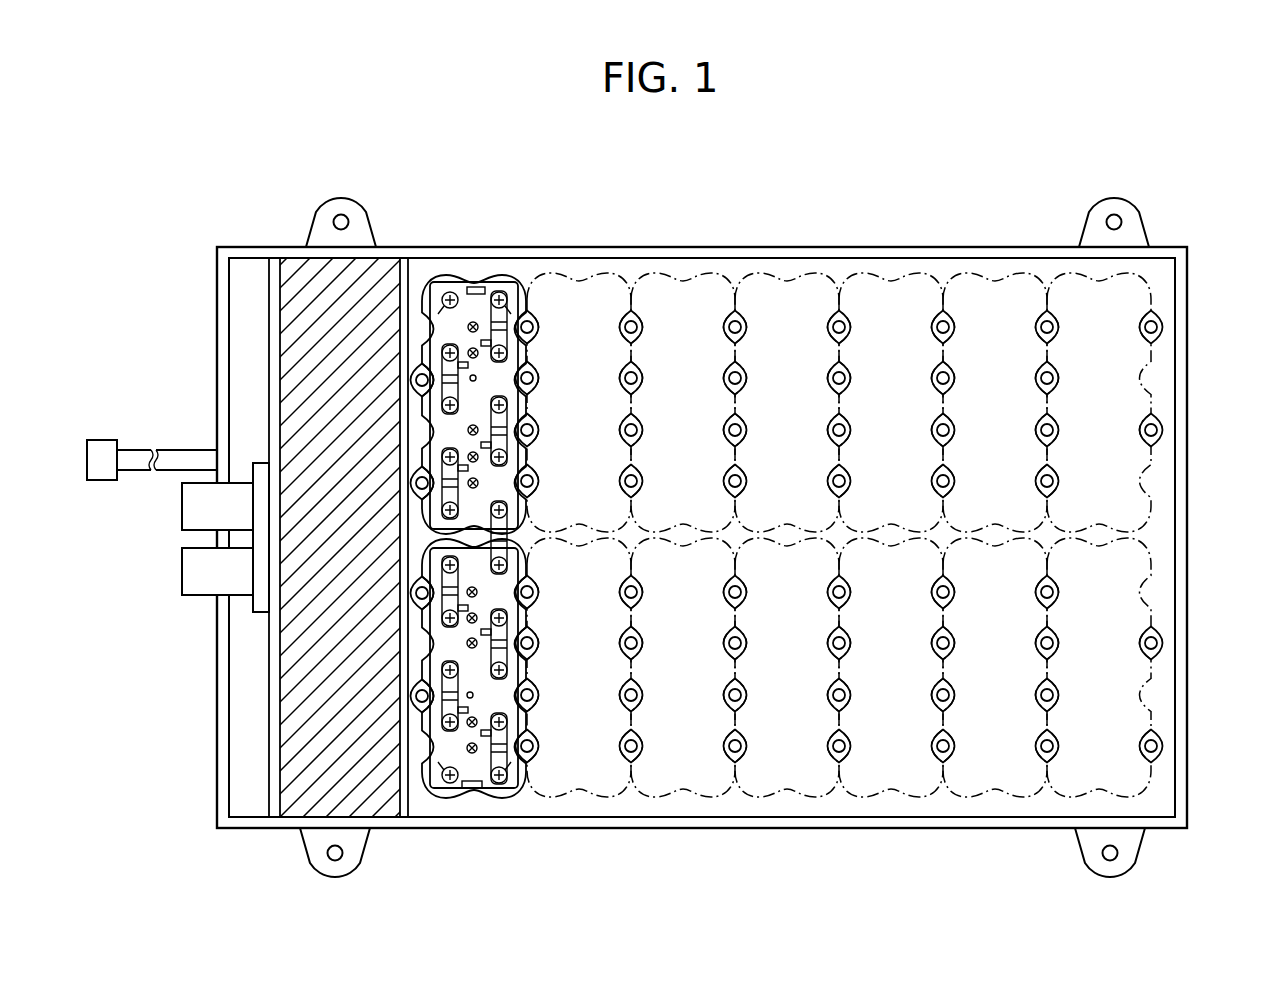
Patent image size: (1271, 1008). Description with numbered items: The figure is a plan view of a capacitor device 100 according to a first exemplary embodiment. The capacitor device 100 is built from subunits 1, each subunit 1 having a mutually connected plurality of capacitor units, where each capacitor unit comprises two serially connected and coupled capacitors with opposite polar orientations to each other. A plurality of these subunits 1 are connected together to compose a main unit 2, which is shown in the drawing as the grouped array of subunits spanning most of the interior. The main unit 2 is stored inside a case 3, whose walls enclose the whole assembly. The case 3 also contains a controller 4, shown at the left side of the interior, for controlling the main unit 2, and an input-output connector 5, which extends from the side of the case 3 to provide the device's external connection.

The capacitor device 100 is at (1192, 240).
The subunit 1 is at (453, 273).
The main unit 2 is at (1095, 238).
The case 3 is at (1188, 498).
The controller 4 is at (365, 790).
The input-output connector 5 is at (103, 440).